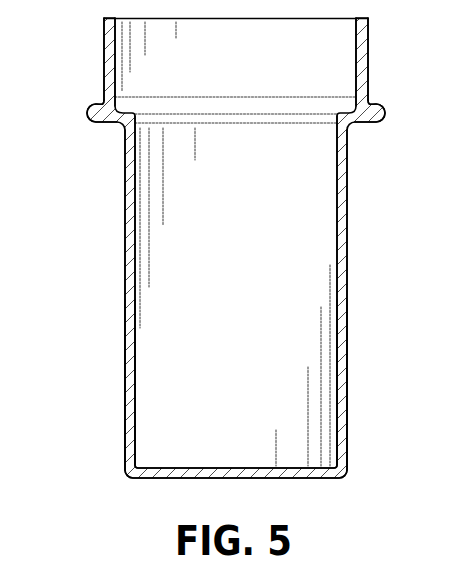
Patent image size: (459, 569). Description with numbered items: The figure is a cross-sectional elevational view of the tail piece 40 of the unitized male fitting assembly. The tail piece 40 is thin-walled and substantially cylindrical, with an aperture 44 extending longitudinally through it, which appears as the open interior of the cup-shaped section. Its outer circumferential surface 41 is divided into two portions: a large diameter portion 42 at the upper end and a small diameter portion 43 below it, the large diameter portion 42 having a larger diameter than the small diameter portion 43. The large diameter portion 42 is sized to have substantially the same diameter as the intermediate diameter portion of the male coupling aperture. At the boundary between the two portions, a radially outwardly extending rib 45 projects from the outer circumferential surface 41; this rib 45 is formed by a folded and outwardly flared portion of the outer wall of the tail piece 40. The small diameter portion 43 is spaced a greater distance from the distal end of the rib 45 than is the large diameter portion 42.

The tail piece 40 is at (80, 292).
The outer circumferential surface 41 is at (125, 378).
The large diameter portion 42 is at (104, 53).
The small diameter portion 43 is at (125, 192).
The aperture 44 is at (241, 76).
The rib 45 is at (88, 110).